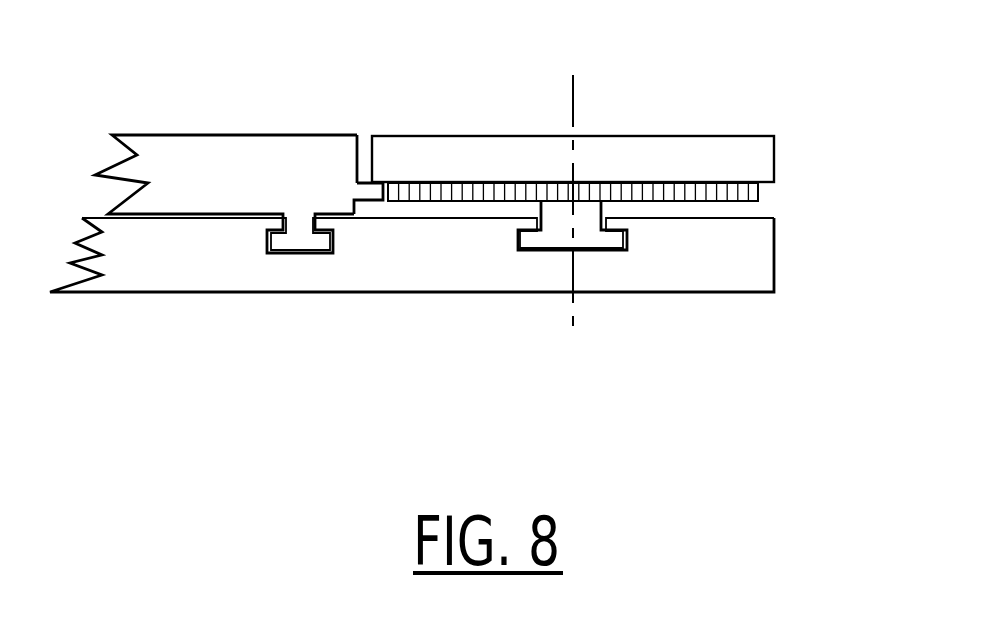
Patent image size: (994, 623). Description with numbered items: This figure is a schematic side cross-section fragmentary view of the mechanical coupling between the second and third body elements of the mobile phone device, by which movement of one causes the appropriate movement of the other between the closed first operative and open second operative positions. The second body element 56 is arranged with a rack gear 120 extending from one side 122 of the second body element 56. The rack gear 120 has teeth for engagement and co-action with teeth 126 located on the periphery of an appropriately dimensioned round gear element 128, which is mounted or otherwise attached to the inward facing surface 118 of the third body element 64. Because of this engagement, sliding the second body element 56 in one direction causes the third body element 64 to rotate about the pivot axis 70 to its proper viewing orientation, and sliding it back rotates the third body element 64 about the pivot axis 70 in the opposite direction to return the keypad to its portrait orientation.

The second body element 56 is at (185, 152).
The one side of the second body element 122 is at (358, 133).
The rack gear 120 is at (367, 190).
The third body element 64 is at (620, 137).
The teeth 126 is at (728, 183).
The inward facing surface 118 is at (770, 189).
The round gear element 128 is at (668, 201).
The pivot axis 70 is at (567, 328).